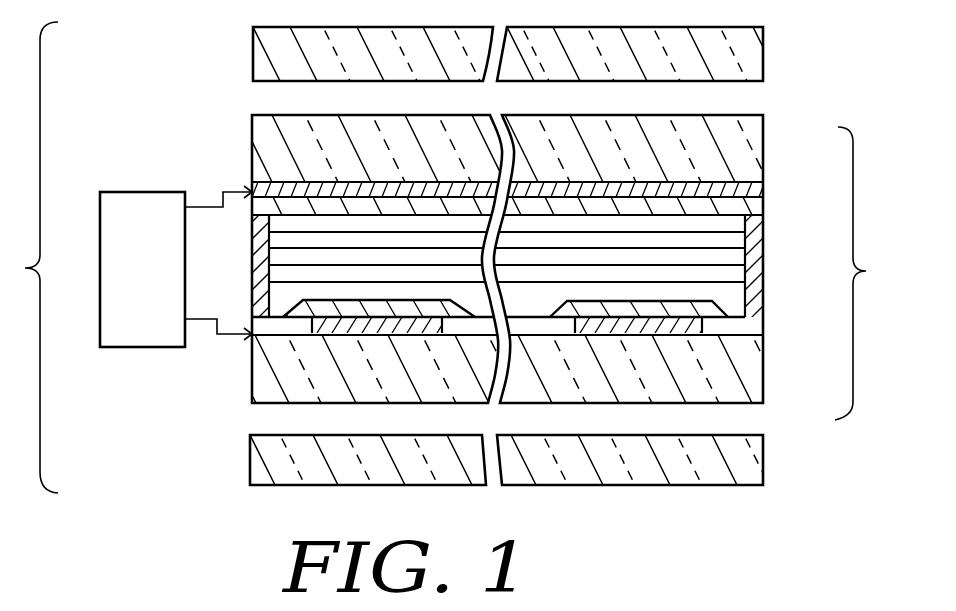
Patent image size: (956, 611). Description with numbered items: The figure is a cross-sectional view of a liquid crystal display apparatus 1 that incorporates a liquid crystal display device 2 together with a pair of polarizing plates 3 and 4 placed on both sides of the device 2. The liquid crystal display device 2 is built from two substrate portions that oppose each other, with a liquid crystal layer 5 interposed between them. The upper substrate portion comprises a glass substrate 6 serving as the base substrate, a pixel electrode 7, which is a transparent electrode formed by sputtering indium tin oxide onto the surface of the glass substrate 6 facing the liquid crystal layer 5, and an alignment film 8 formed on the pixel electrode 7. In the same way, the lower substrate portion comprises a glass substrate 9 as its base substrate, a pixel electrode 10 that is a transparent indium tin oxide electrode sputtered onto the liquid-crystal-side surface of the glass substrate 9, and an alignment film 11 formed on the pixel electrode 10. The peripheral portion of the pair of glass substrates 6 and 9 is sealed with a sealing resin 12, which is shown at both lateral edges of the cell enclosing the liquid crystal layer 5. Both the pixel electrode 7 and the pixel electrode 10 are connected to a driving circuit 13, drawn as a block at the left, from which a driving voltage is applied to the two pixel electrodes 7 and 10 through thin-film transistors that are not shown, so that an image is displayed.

The liquid crystal display apparatus 1 is at (32, 257).
The liquid crystal display device 2 is at (861, 273).
The polarizing plate 3 is at (763, 63).
The polarizing plate 4 is at (745, 467).
The liquid crystal layer 5 is at (733, 244).
The glass substrate 6 is at (763, 146).
The pixel electrode 7 is at (763, 195).
The alignment film 8 is at (763, 210).
The glass substrate 9 is at (750, 406).
The pixel electrode 10 is at (685, 334).
The alignment film 11 is at (753, 328).
The sealing resin 12 is at (258, 258).
The driving circuit 13 is at (140, 192).